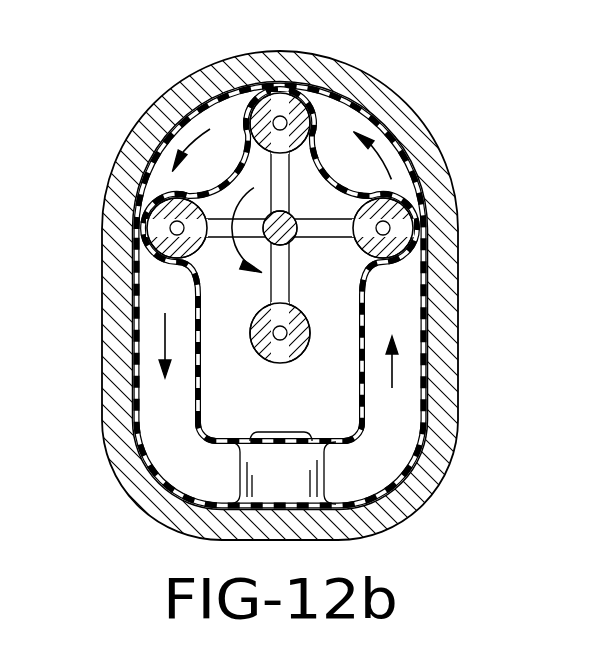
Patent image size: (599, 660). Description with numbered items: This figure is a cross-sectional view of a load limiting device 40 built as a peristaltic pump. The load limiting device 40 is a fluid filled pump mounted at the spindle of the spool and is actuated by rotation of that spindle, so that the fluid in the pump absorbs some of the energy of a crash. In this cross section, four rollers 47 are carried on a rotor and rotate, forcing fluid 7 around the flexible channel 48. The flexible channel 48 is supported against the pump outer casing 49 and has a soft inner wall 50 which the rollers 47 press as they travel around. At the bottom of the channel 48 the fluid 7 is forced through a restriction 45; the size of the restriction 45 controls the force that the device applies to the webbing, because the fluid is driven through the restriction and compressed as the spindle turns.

The load limiting device 40 is at (448, 101).
The fluid 7 is at (408, 303).
The pump outer casing 49 is at (123, 333).
The rollers 47 is at (273, 103).
The restriction 45 is at (266, 472).
The soft inner wall 50 is at (355, 415).
The flexible channel 48 is at (190, 458).